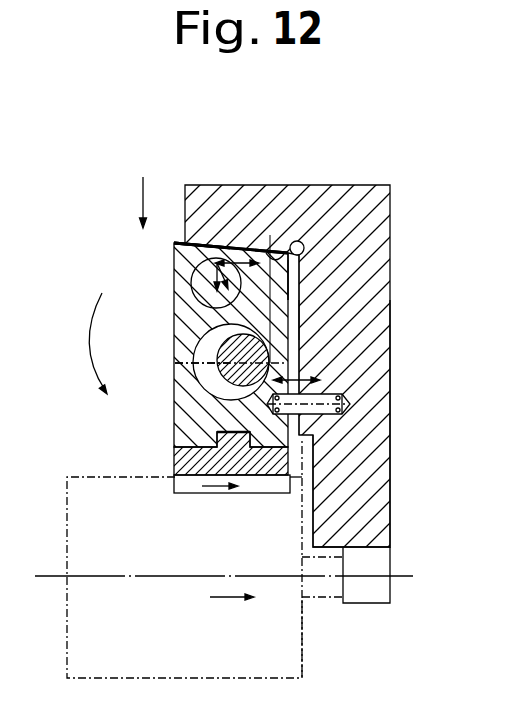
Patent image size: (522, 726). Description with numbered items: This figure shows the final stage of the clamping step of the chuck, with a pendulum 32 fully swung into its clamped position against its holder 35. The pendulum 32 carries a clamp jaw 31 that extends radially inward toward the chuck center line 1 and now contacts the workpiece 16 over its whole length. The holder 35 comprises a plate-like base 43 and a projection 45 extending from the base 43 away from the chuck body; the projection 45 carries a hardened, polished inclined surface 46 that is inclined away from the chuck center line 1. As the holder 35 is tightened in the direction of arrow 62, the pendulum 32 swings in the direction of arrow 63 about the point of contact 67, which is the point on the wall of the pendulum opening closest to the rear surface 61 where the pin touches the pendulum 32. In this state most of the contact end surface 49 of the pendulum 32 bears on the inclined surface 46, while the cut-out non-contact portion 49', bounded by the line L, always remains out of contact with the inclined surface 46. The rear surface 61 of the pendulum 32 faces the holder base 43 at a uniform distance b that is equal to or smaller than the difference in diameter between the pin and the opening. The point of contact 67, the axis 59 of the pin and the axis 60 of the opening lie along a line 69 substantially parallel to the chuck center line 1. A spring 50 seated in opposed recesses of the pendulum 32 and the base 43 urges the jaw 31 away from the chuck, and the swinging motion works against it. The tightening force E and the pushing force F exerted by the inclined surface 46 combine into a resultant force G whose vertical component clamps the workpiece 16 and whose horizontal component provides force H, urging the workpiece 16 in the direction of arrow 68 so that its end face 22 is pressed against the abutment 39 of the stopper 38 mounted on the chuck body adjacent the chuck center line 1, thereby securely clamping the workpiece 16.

The chuck center line 1 is at (403, 577).
The workpiece 16 is at (92, 477).
The end face 22 is at (303, 653).
The clamp jaw 31 is at (174, 462).
The pendulum 32 is at (176, 305).
The holder 35 is at (340, 182).
The stopper 38 is at (334, 598).
The abutment 39 is at (302, 560).
The base 43 is at (391, 378).
The projection 45 is at (215, 242).
The inclined surface 46 is at (262, 252).
The contact end surface 49 is at (209, 216).
The non-contact portion 49' is at (261, 243).
The spring 50 is at (328, 420).
The axis of the pin 59 is at (304, 272).
The axis of the opening 60 is at (196, 348).
The rear surface 61 is at (306, 260).
The arrow 62 is at (143, 190).
The arrow 63 is at (90, 340).
The point of contact 67 is at (300, 318).
The arrow 68 is at (227, 600).
The line 69 is at (176, 364).
The uniform distance b is at (300, 364).
The tightening force E is at (215, 264).
The pushing force F is at (174, 249).
The resultant force G is at (214, 289).
The force H is at (211, 489).
The line L is at (299, 242).